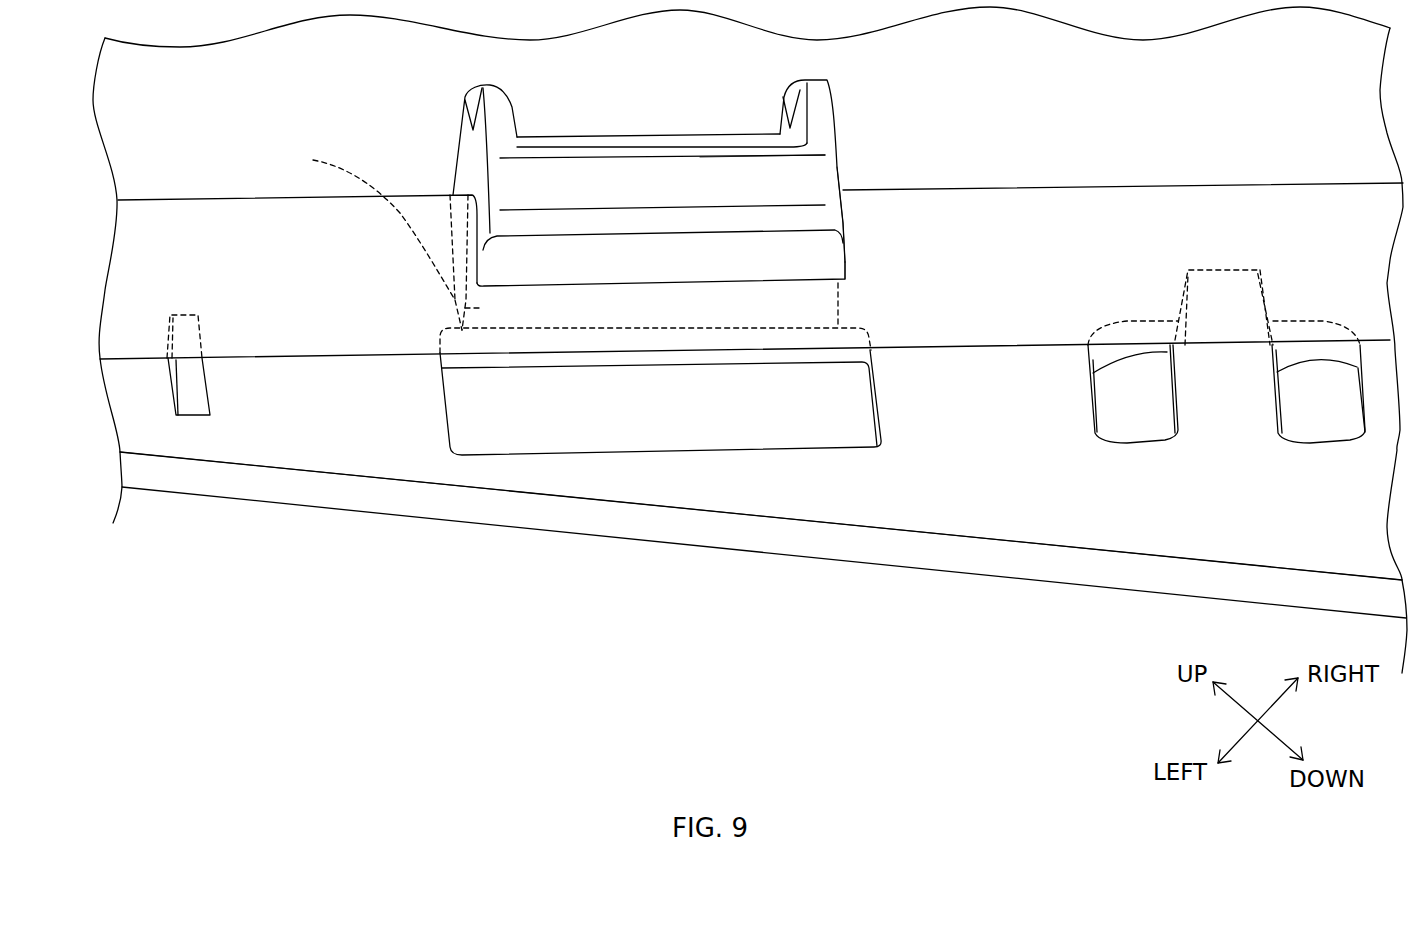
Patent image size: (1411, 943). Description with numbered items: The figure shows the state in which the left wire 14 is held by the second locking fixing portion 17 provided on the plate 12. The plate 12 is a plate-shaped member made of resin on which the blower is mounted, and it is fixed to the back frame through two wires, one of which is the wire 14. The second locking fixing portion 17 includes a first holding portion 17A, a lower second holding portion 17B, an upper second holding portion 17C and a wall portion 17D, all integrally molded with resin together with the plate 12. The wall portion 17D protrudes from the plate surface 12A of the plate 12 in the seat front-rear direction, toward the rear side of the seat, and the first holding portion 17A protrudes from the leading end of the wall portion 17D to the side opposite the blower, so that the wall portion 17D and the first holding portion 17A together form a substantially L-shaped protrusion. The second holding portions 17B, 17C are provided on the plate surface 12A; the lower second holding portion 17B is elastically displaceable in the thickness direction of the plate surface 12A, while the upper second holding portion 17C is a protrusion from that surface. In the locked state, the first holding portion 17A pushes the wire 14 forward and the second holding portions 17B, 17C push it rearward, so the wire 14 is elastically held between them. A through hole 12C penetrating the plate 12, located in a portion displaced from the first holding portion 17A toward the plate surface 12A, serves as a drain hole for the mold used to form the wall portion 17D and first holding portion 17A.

The plate 12 is at (357, 512).
The plate surface 12A is at (923, 513).
The through hole 12C is at (673, 448).
The left wire 14 is at (385, 358).
The second locking fixing portion 17 is at (438, 125).
The first holding portion 17A is at (847, 223).
The lower second holding portion 17B is at (1230, 390).
The upper second holding portion 17C is at (195, 400).
The wall portion 17D is at (568, 247).